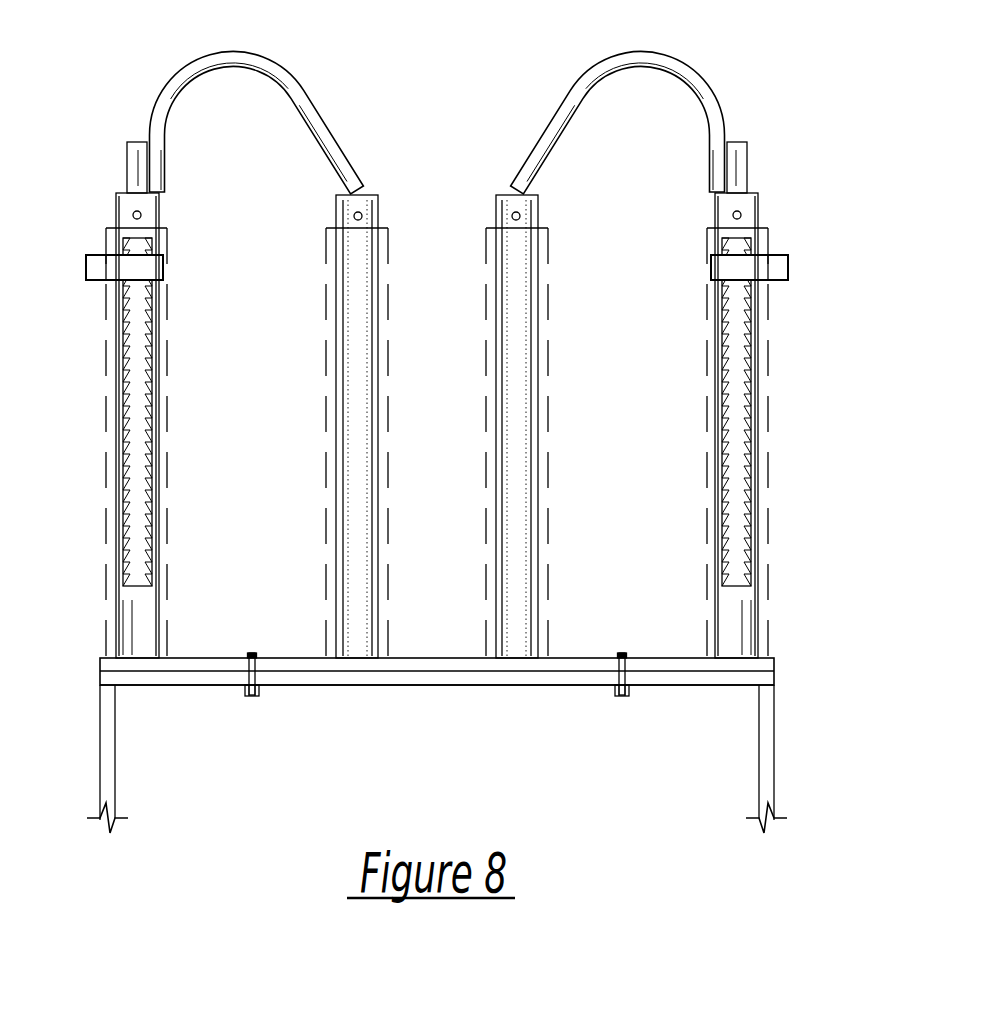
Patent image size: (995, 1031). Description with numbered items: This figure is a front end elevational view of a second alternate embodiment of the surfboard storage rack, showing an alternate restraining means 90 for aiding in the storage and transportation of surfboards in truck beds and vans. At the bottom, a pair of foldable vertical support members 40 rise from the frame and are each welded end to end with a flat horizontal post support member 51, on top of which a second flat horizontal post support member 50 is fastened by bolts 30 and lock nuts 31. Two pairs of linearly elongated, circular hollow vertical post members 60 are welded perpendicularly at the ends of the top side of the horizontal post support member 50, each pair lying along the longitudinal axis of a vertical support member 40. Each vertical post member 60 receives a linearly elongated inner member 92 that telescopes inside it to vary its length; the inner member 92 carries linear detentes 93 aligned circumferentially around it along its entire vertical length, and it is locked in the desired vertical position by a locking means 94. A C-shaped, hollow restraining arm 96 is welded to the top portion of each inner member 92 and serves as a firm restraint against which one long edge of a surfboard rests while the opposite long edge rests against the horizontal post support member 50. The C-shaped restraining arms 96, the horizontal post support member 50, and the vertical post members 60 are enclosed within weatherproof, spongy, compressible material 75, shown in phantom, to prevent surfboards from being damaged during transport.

The bolt 30 is at (251, 654).
The lock nut 31 is at (253, 700).
The foldable vertical support member 40 is at (766, 762).
The horizontal post support member 50 is at (477, 664).
The horizontal post support member 51 is at (740, 688).
The vertical post member 60 is at (116, 436).
The compressible material 75 is at (106, 491).
The alternate restraining means 90 is at (128, 97).
The inner member 92 is at (468, 412).
The linear detentes 93 is at (746, 398).
The locking means 94 is at (98, 254).
The C-shaped restraining arm 96 is at (321, 117).